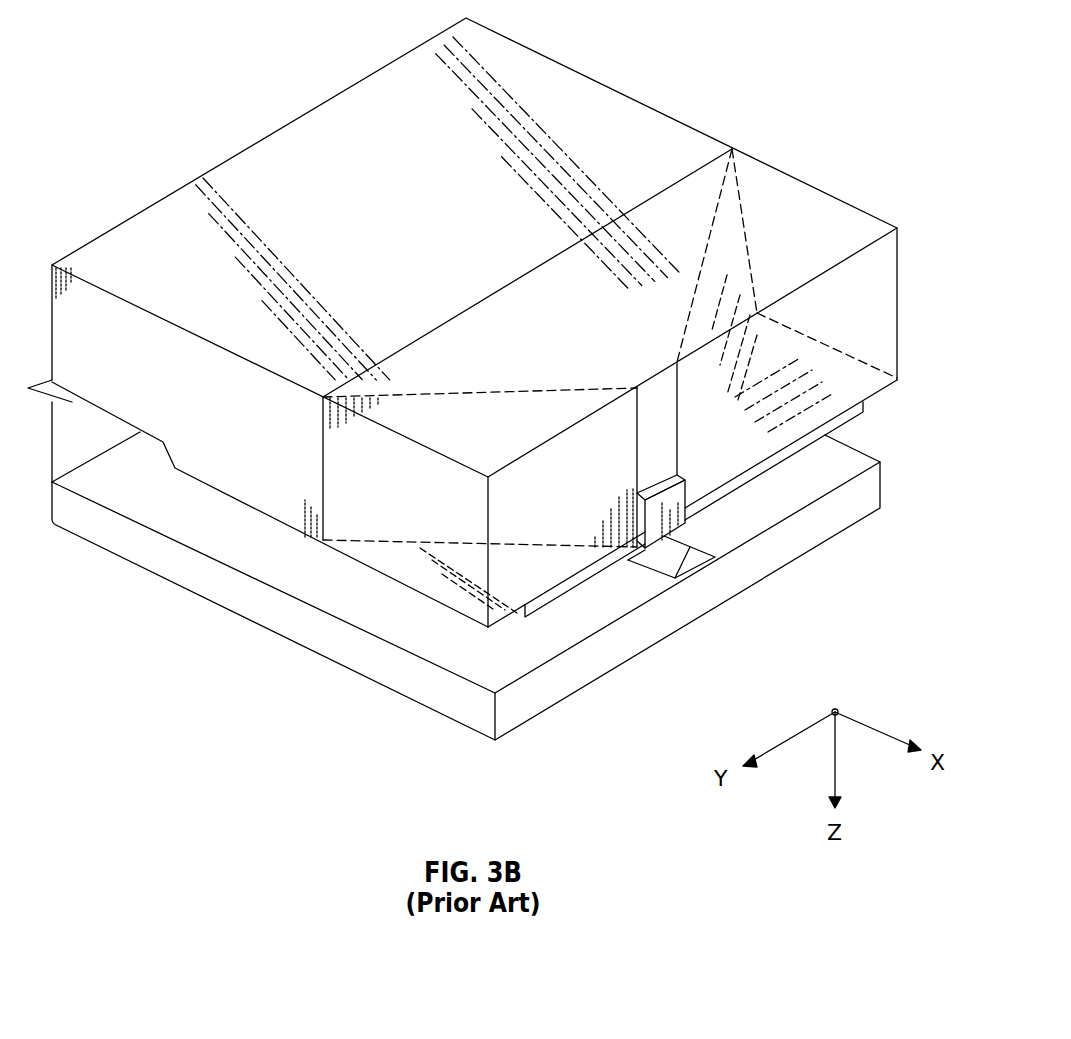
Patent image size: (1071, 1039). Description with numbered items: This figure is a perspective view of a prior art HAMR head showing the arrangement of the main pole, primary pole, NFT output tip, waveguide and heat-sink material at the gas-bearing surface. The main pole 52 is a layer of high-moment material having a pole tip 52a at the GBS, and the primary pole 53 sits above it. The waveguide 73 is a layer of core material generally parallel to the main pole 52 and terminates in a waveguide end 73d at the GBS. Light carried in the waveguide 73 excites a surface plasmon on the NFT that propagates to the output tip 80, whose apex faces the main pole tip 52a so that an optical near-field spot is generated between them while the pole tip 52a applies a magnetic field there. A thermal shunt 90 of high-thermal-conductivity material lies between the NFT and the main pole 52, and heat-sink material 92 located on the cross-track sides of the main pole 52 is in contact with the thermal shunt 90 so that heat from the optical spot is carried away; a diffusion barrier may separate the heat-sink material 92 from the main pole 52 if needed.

The main pole 52 is at (620, 300).
The pole tip 52a is at (678, 495).
The primary pole 53 is at (343, 118).
The waveguide 73 is at (430, 683).
The waveguide end 73d is at (720, 588).
The output tip 80 is at (670, 560).
The thermal shunt 90 is at (853, 417).
The heat-sink material 92 is at (857, 227).